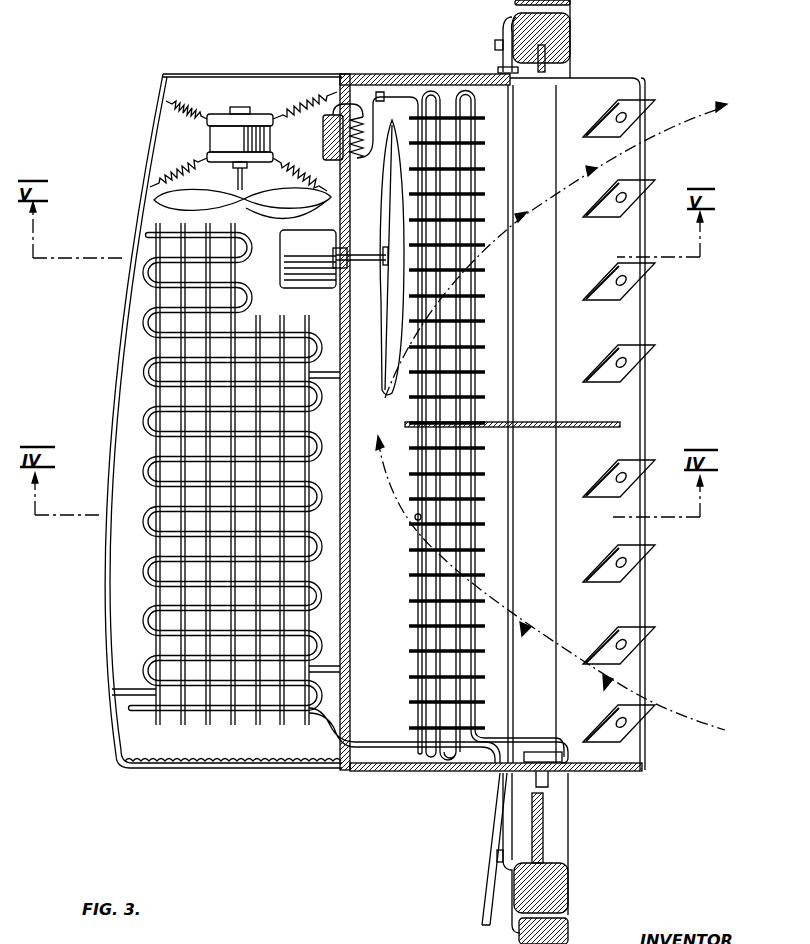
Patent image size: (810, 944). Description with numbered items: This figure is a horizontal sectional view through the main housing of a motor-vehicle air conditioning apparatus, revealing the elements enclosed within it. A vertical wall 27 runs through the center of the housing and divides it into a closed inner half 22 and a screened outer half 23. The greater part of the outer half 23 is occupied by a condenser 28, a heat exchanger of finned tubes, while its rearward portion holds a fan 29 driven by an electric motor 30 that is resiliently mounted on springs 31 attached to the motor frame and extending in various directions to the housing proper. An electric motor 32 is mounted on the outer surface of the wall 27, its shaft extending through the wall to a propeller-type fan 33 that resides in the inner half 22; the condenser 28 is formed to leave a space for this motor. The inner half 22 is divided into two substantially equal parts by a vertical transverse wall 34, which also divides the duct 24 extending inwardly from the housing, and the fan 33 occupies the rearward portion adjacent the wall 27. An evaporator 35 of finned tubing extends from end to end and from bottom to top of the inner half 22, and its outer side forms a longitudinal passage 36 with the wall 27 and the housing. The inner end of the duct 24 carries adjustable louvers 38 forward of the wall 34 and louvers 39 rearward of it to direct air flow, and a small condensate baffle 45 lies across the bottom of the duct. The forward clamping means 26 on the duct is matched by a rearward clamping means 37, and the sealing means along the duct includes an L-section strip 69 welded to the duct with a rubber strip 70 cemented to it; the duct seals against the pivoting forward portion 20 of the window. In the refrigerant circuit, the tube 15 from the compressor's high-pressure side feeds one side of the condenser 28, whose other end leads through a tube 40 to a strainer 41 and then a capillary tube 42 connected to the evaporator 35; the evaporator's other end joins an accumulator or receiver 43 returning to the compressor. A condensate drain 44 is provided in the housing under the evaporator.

The tube 15 is at (350, 744).
The forward portion of the window 20 is at (545, 832).
The inner half of the housing 22 is at (400, 745).
The outer half of the housing 23 is at (222, 752).
The duct 24 is at (573, 95).
The clamping means 26 is at (505, 832).
The vertical wall 27 is at (332, 728).
The condenser 28 is at (140, 628).
The fan 29 is at (178, 204).
The electric motor 30 is at (210, 140).
The springs 31 is at (328, 93).
The electric motor 32 is at (312, 286).
The propeller-type fan 33 is at (392, 312).
The vertical transverse wall 34 is at (405, 424).
The evaporator 35 is at (416, 638).
The longitudinal passage 36 is at (384, 501).
The rearward clamping means 37 is at (503, 20).
The louvers 38 is at (650, 652).
The louvers 39 is at (642, 200).
The tube 40 is at (282, 226).
The strainer 41 is at (323, 137).
The capillary tube 42 is at (358, 160).
The accumulator or receiver 43 is at (532, 752).
The condensate drain 44 is at (414, 517).
The condensate baffle 45 is at (513, 335).
The L-section strip 69 is at (548, 776).
The rubber strip 70 is at (530, 782).